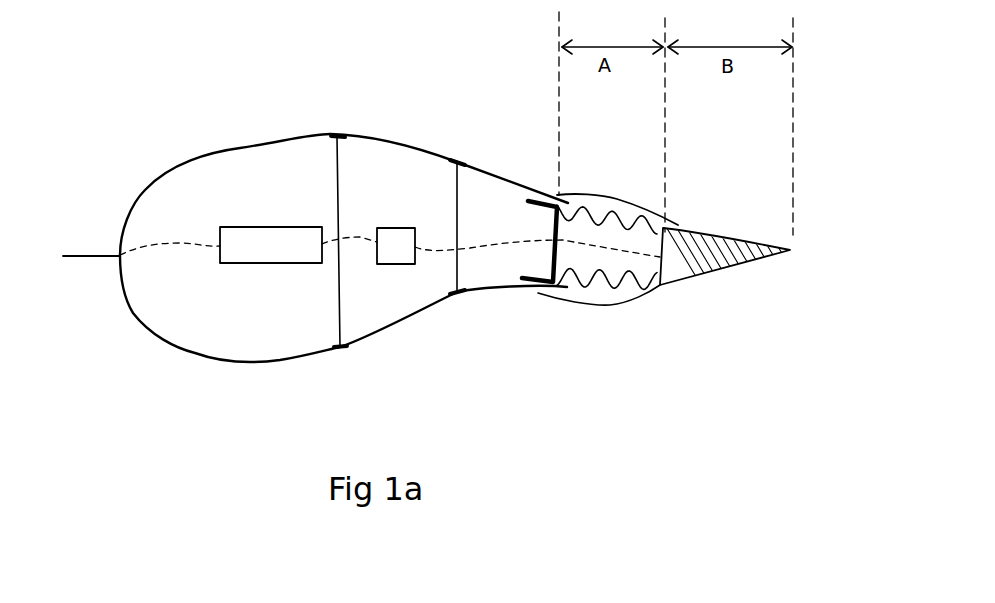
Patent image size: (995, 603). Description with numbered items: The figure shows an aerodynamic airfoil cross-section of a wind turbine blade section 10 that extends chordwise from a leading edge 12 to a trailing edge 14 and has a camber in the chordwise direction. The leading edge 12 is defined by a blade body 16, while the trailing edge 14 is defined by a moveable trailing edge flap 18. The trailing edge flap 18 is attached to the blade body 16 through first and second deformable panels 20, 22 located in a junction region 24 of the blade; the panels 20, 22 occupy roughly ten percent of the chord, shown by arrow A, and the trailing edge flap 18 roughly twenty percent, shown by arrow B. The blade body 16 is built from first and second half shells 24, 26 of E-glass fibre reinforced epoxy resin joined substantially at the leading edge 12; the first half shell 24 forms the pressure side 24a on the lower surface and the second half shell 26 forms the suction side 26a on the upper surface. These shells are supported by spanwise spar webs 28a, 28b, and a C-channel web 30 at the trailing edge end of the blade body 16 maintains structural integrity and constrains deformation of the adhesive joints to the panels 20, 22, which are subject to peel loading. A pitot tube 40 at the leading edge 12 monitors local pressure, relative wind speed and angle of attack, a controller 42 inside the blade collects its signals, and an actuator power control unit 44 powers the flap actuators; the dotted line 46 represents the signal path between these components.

The blade section 10 is at (228, 466).
The leading edge 12 is at (99, 233).
The trailing edge 14 is at (793, 225).
The blade body 16 is at (312, 100).
The trailing edge flap 18 is at (730, 284).
The first deformable panel 20 is at (571, 294).
The second deformable panel 22 is at (598, 197).
The first half shell 24 is at (297, 363).
The pressure side 24a is at (343, 318).
The second half shell 26 is at (240, 148).
The suction side 26a is at (344, 182).
The spar web 28a is at (340, 184).
The spar web 28b is at (459, 186).
The C-channel web 30 is at (530, 201).
The pitot tube 40 is at (73, 265).
The controller 42 is at (257, 247).
The actuator power control unit 44 is at (393, 252).
The dotted line 46 is at (162, 247).